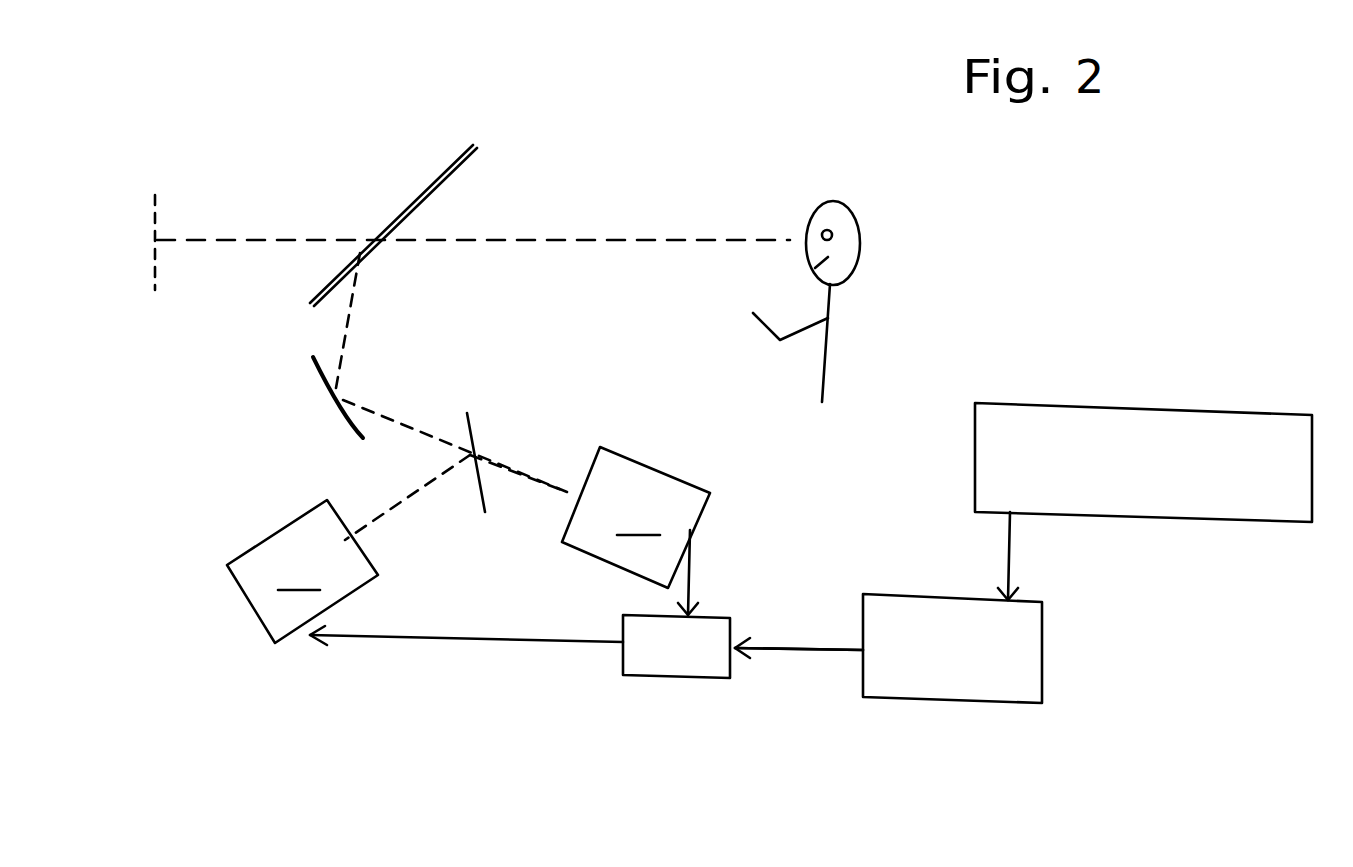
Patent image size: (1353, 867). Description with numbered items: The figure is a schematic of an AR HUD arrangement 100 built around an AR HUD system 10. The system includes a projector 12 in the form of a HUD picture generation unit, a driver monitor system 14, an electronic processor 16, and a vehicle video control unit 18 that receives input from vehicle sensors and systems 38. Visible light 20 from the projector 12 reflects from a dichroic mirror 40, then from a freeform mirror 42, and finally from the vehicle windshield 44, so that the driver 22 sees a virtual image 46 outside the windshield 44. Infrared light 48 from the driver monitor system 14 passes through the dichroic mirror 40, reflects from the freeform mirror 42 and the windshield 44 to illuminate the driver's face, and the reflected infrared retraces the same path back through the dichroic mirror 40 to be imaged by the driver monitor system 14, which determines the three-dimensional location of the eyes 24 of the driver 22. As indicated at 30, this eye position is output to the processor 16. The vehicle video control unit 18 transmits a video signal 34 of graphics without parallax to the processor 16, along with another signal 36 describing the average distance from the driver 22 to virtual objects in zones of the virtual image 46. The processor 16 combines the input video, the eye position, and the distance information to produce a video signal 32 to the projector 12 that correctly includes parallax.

The AR HUD arrangement 100 is at (285, 150).
The AR HUD system 10 is at (1080, 722).
The projector 12 is at (302, 571).
The driver monitor system 14 is at (636, 517).
The electronic processor 16 is at (667, 680).
The vehicle video control unit 18 is at (1045, 655).
The visible light 20 is at (417, 497).
The driver 22 is at (850, 215).
The eyes 24 is at (832, 237).
The eye location information 30 is at (693, 573).
The video signal 32 is at (477, 640).
The video signal 34 is at (802, 653).
The signal 36 is at (799, 649).
The vehicle sensors and systems 38 is at (1160, 405).
The dichroic mirror 40 is at (473, 433).
The freeform mirror 42 is at (313, 373).
The vehicle windshield 44 is at (435, 175).
The virtual image 46 is at (157, 283).
The infrared light 48 is at (523, 477).